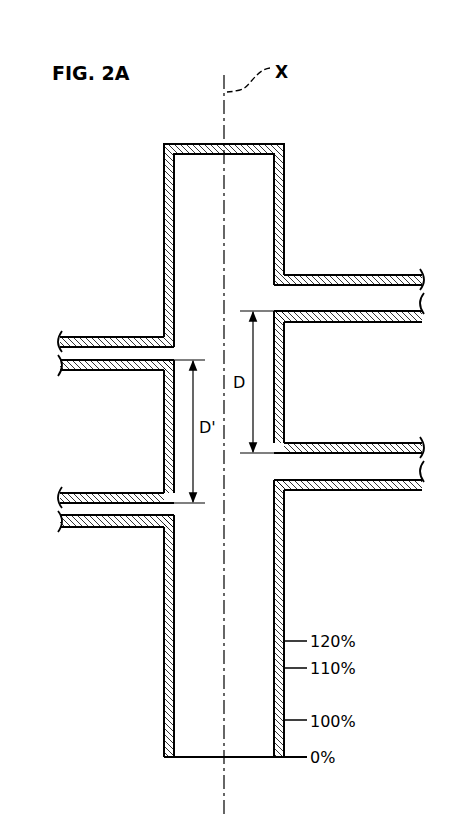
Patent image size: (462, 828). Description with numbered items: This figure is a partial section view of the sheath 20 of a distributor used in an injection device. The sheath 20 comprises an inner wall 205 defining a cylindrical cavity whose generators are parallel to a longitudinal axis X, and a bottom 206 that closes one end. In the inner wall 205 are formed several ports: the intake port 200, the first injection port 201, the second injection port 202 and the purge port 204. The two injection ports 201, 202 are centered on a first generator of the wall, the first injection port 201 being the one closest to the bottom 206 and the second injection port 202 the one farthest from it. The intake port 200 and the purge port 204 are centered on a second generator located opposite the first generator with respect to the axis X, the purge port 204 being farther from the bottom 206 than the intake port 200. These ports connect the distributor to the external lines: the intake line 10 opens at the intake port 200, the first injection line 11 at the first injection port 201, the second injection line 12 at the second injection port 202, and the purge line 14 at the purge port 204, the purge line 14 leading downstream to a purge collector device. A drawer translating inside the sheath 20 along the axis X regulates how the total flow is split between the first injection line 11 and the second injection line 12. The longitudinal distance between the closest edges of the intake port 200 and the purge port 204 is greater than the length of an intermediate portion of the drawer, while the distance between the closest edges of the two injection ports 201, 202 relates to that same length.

The sheath 20 is at (228, 426).
The intake line 10 is at (100, 337).
The first injection line 11 is at (352, 275).
The second injection line 12 is at (352, 443).
The purge line 14 is at (100, 493).
The intake port 200 is at (178, 353).
The first injection port 201 is at (272, 297).
The second injection port 202 is at (272, 466).
The purge port 204 is at (176, 513).
The inner wall 205 is at (171, 686).
The bottom 206 is at (178, 163).